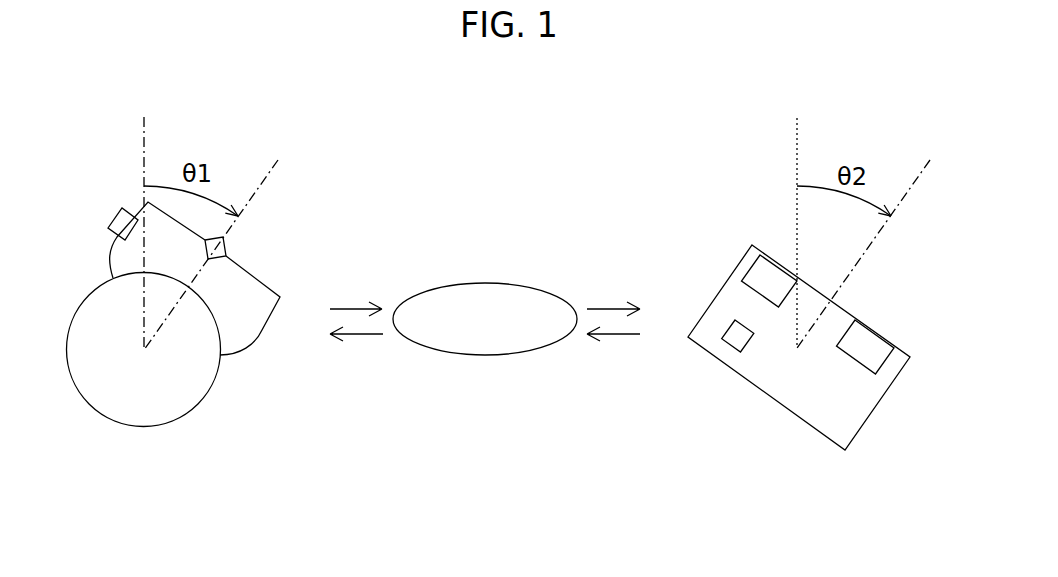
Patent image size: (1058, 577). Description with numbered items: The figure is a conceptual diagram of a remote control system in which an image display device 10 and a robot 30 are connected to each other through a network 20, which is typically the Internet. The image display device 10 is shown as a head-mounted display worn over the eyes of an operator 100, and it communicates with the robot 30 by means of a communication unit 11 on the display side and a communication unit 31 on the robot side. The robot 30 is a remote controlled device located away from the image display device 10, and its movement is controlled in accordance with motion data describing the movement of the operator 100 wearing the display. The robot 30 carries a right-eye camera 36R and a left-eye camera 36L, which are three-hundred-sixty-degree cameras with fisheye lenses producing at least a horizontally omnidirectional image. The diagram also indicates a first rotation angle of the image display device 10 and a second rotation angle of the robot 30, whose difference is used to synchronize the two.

The image display device 10 is at (257, 283).
The communication unit 11 is at (113, 222).
The operator 100 is at (190, 393).
The network 20 is at (488, 282).
The robot 30 is at (868, 410).
The communication unit 31 is at (732, 345).
The left-eye camera 36L is at (772, 270).
The right-eye camera 36R is at (873, 340).